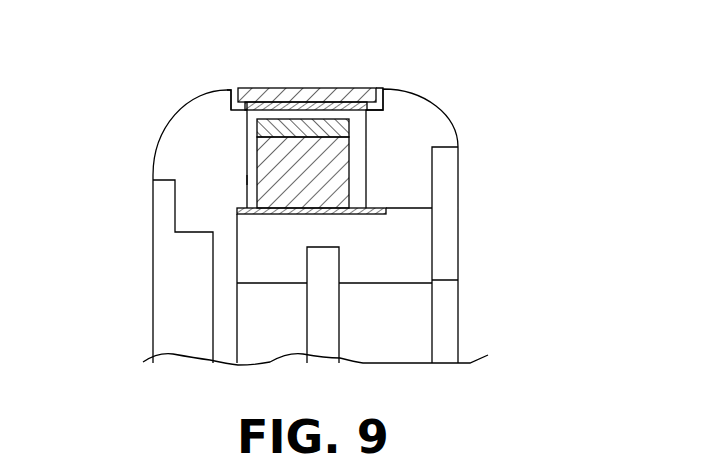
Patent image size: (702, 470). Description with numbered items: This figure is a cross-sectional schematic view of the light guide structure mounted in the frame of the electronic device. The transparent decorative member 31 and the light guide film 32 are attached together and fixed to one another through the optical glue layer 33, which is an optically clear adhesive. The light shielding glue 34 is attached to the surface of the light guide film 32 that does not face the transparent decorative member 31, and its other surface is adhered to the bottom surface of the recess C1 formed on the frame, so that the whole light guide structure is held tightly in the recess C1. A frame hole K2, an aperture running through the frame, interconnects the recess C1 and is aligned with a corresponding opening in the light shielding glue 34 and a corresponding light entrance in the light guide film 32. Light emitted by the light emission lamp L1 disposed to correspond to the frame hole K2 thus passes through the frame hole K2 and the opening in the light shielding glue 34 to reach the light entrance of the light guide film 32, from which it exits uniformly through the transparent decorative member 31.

The transparent decorative member 31 is at (362, 90).
The light guide film 32 is at (383, 107).
The optical glue layer 33 is at (243, 106).
The light shielding glue 34 is at (246, 108).
The light emission lamp L1 is at (348, 130).
The recess C1 is at (227, 93).
The frame hole K2 is at (252, 180).